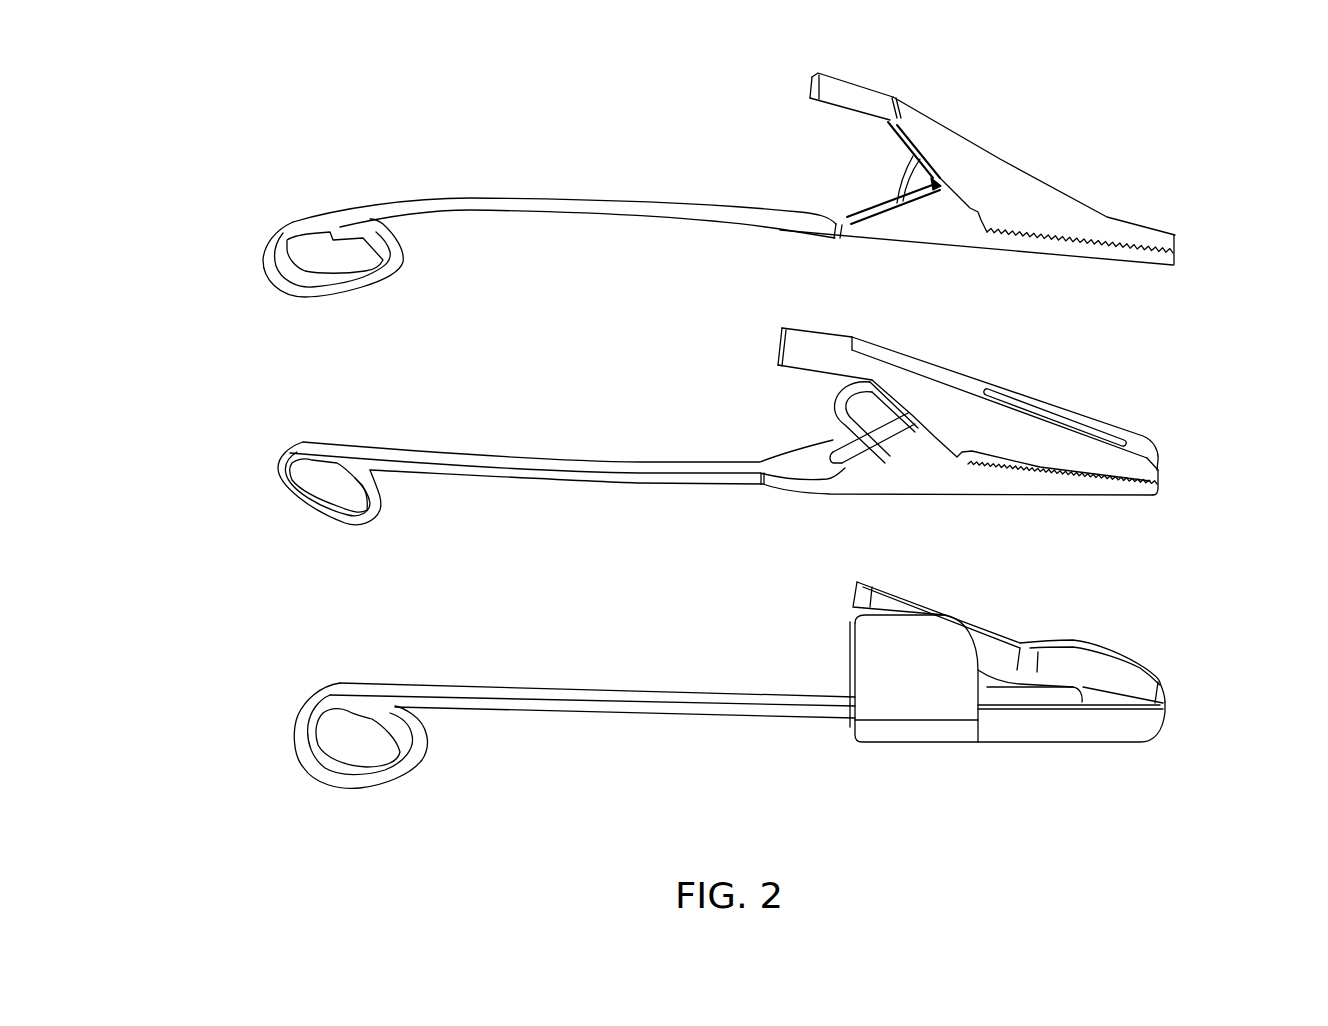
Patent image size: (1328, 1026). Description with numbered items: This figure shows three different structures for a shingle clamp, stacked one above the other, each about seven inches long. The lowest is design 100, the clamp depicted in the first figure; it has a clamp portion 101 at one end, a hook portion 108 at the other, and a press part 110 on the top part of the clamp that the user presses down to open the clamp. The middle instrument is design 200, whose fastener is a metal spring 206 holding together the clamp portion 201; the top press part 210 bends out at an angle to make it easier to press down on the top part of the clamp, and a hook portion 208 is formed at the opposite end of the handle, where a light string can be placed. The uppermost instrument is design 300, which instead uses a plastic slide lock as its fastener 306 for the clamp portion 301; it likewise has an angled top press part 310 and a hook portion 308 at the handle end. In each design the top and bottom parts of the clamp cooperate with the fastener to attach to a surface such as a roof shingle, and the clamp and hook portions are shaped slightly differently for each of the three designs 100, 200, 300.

The shingle clamp design 100 is at (1188, 653).
The clamp portion 101 is at (1113, 670).
The hook portion 108 is at (300, 748).
The press part 110 is at (892, 603).
The shingle clamp design 200 is at (1188, 431).
The clamp portion 201 is at (1047, 438).
The metal spring 206 is at (833, 405).
The hook portion 208 is at (280, 473).
The top press part 210 is at (828, 339).
The shingle clamp design 300 is at (1188, 198).
The clamp portion 301 is at (1064, 213).
The plastic slide lock 306 is at (915, 172).
The hook portion 308 is at (262, 265).
The top press part 310 is at (867, 97).